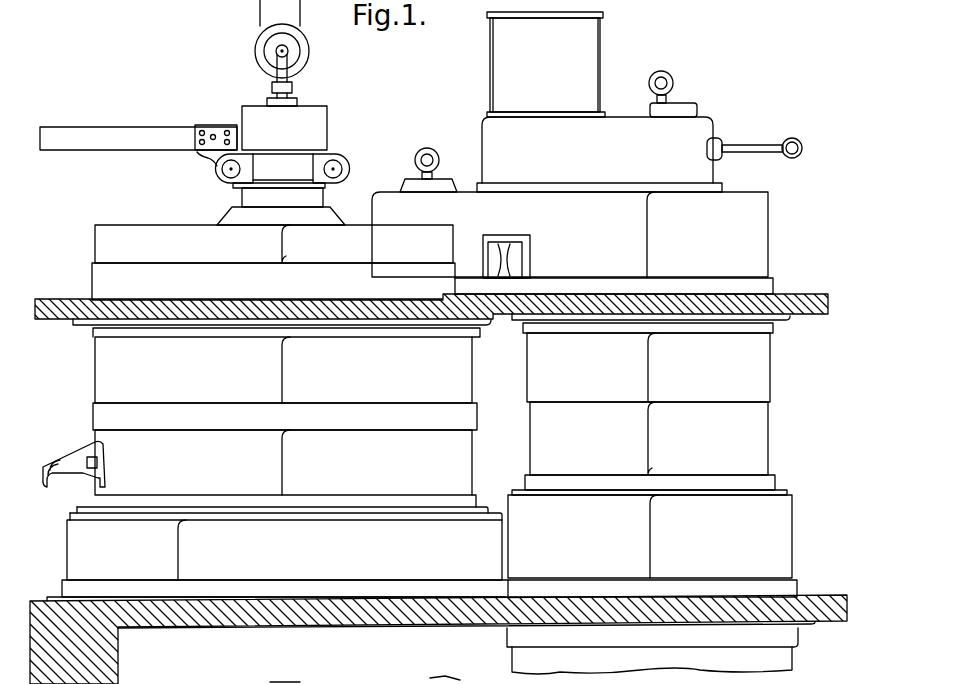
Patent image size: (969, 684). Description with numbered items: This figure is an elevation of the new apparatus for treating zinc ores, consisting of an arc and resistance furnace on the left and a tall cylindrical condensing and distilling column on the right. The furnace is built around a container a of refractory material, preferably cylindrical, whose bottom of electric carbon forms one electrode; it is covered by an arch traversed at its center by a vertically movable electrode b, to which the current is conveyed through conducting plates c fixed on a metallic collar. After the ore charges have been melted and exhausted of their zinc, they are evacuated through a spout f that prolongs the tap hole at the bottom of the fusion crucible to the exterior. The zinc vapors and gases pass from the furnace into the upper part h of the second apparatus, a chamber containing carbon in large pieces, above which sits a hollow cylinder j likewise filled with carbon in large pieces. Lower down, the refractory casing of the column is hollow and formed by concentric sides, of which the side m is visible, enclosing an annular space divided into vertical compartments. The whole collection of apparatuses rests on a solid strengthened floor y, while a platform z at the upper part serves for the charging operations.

The container a is at (286, 411).
The electrode b is at (273, 140).
The conducting plates c is at (153, 135).
The spout f is at (73, 465).
The upper part (chamber) h is at (570, 234).
The hollow cylinder j is at (546, 64).
The concentric side m is at (650, 536).
The floor y is at (820, 613).
The platform z is at (805, 304).